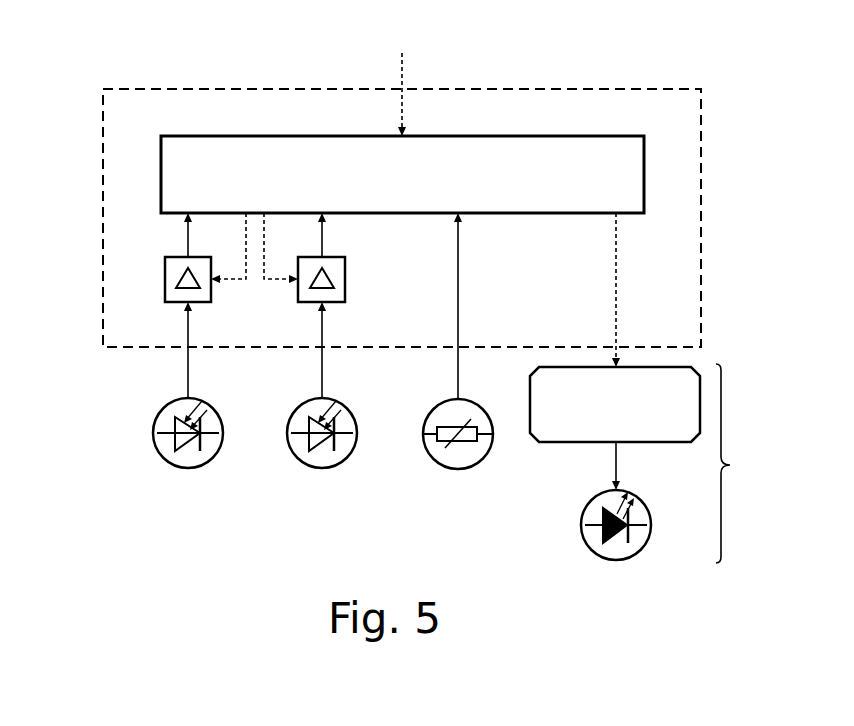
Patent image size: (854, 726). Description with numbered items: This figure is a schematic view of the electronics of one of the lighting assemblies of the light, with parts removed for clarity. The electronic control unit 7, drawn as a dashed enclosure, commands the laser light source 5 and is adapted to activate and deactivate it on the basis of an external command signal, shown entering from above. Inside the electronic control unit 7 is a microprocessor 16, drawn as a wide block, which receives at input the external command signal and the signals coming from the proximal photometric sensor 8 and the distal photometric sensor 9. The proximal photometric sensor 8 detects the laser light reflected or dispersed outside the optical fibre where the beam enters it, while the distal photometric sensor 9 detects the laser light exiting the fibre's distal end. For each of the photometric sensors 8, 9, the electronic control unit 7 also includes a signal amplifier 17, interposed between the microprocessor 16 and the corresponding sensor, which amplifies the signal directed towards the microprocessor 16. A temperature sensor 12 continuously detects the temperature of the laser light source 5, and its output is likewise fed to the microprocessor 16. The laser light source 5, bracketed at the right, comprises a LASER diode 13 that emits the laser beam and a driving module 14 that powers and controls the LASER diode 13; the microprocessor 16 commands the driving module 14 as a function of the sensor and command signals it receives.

The electronic control unit 7 is at (118, 100).
The microprocessor 16 is at (553, 148).
The signal amplifier 17 is at (310, 296).
The proximal photometric sensor 8 is at (181, 459).
The distal photometric sensor 9 is at (314, 459).
The temperature sensor 12 is at (447, 456).
The driving module 14 is at (575, 433).
The LASER diode 13 is at (598, 545).
The laser light source 5 is at (735, 463).